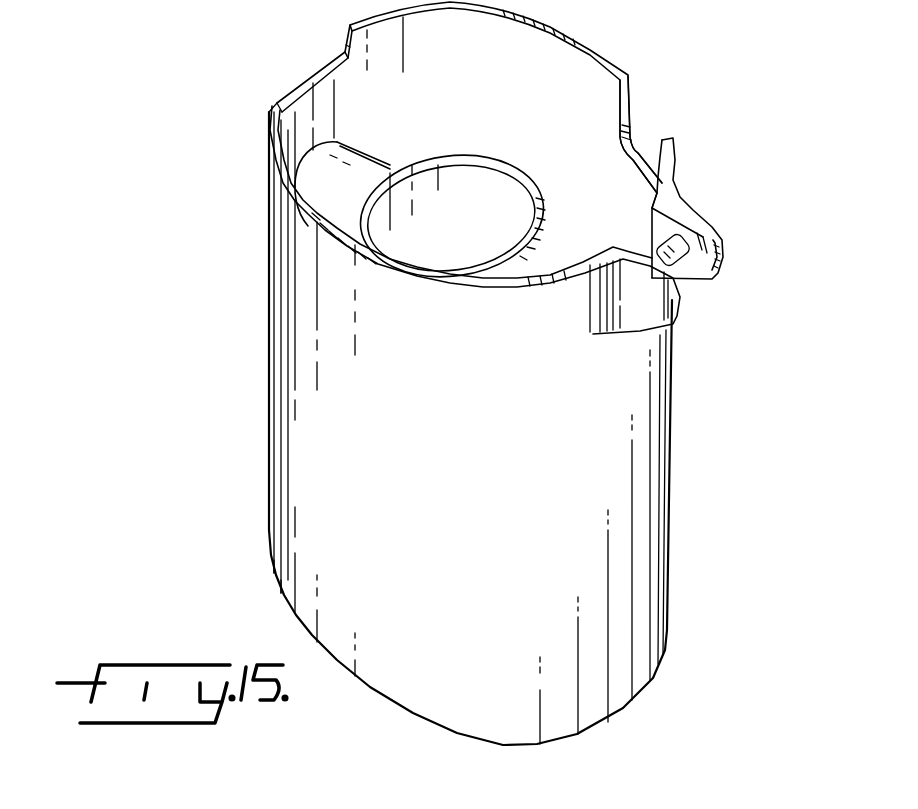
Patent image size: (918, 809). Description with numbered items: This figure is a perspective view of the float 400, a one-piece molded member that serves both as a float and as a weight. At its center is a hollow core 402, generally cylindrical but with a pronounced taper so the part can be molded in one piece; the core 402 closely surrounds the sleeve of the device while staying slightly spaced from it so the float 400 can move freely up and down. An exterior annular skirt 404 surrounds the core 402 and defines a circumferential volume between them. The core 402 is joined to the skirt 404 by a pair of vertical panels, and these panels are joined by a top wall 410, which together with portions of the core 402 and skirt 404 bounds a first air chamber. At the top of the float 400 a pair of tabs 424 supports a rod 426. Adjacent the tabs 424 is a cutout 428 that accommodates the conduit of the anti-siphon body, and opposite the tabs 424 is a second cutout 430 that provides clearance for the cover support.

The float 400 is at (262, 450).
The central, hollow core 402 is at (477, 160).
The exterior annular skirt 404 is at (293, 557).
The top wall 410 is at (327, 197).
The tabs 424 is at (677, 280).
The rod 426 is at (688, 243).
The cutout 428 is at (645, 165).
The second cutout 430 is at (308, 83).